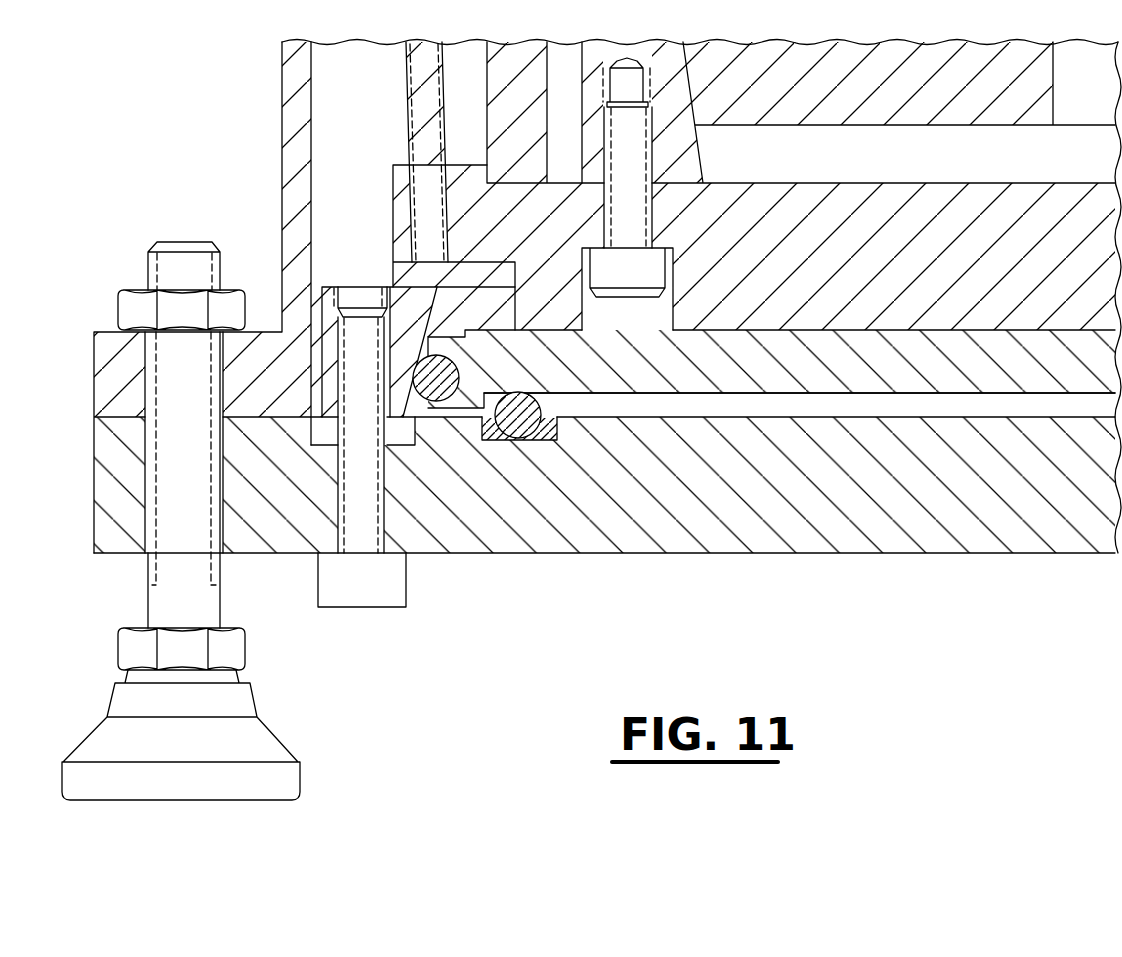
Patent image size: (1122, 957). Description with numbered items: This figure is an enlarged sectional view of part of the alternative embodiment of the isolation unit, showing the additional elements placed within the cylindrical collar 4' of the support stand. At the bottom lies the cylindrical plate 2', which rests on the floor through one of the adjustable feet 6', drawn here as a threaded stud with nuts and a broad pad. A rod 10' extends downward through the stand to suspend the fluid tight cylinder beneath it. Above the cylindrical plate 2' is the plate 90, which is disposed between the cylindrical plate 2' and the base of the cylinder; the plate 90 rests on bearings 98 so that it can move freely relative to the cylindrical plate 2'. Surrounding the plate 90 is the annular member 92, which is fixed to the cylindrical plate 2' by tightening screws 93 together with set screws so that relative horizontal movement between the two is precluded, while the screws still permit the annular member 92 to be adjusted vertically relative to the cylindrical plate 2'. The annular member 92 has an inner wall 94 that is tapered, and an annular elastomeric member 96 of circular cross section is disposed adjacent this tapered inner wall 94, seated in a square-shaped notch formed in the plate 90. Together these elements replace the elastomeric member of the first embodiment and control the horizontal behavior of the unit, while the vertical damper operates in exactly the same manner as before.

The cylindrical plate 2' is at (604, 525).
The cylindrical collar 4' is at (202, 297).
The adjustable foot 6' is at (181, 558).
The rod 10' is at (389, 152).
The plate 90 is at (737, 383).
The annular member 92 is at (400, 300).
The tightening screw 93 is at (372, 607).
The inner wall 94 is at (427, 323).
The annular elastomeric member 96 is at (442, 400).
The bearing 98 is at (527, 428).